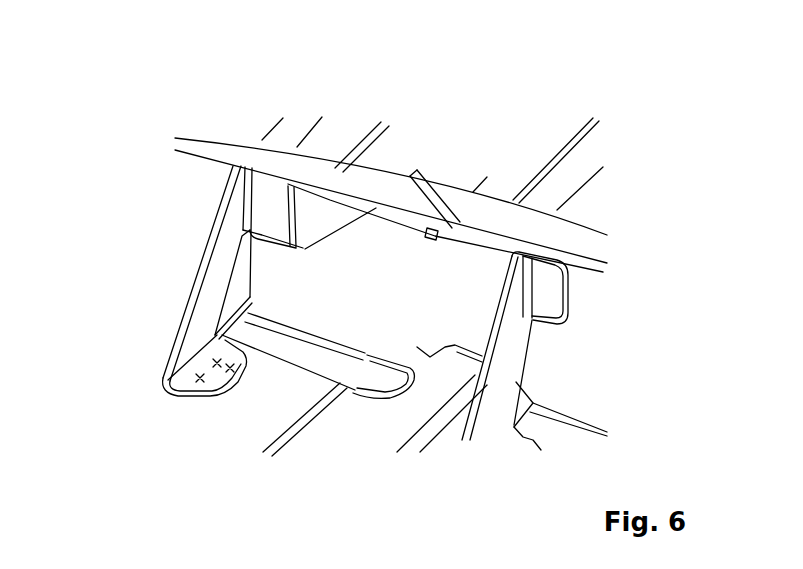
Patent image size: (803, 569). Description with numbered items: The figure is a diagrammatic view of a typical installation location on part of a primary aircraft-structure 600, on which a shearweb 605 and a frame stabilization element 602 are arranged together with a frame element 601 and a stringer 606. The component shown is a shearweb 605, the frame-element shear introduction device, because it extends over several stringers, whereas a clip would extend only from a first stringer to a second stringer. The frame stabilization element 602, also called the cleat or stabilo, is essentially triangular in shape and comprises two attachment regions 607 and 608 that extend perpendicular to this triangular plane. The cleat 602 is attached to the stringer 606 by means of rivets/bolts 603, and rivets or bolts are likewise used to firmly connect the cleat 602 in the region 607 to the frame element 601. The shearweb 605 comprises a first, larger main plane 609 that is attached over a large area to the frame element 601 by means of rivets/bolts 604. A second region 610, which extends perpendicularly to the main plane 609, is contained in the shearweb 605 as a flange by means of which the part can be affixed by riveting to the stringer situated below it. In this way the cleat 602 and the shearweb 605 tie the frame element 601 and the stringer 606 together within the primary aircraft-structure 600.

The primary aircraft-structure 600 is at (506, 129).
The frame element 601 is at (224, 141).
The frame stabilization element 602 is at (203, 250).
The rivets/bolts 603 is at (217, 368).
The rivets/bolts 604 is at (372, 302).
The shearweb 605 is at (458, 366).
The stringer 606 is at (583, 203).
The attachment region 607 is at (267, 196).
The attachment region 608 is at (242, 367).
The main plane 609 is at (473, 308).
The second region 610 is at (330, 367).